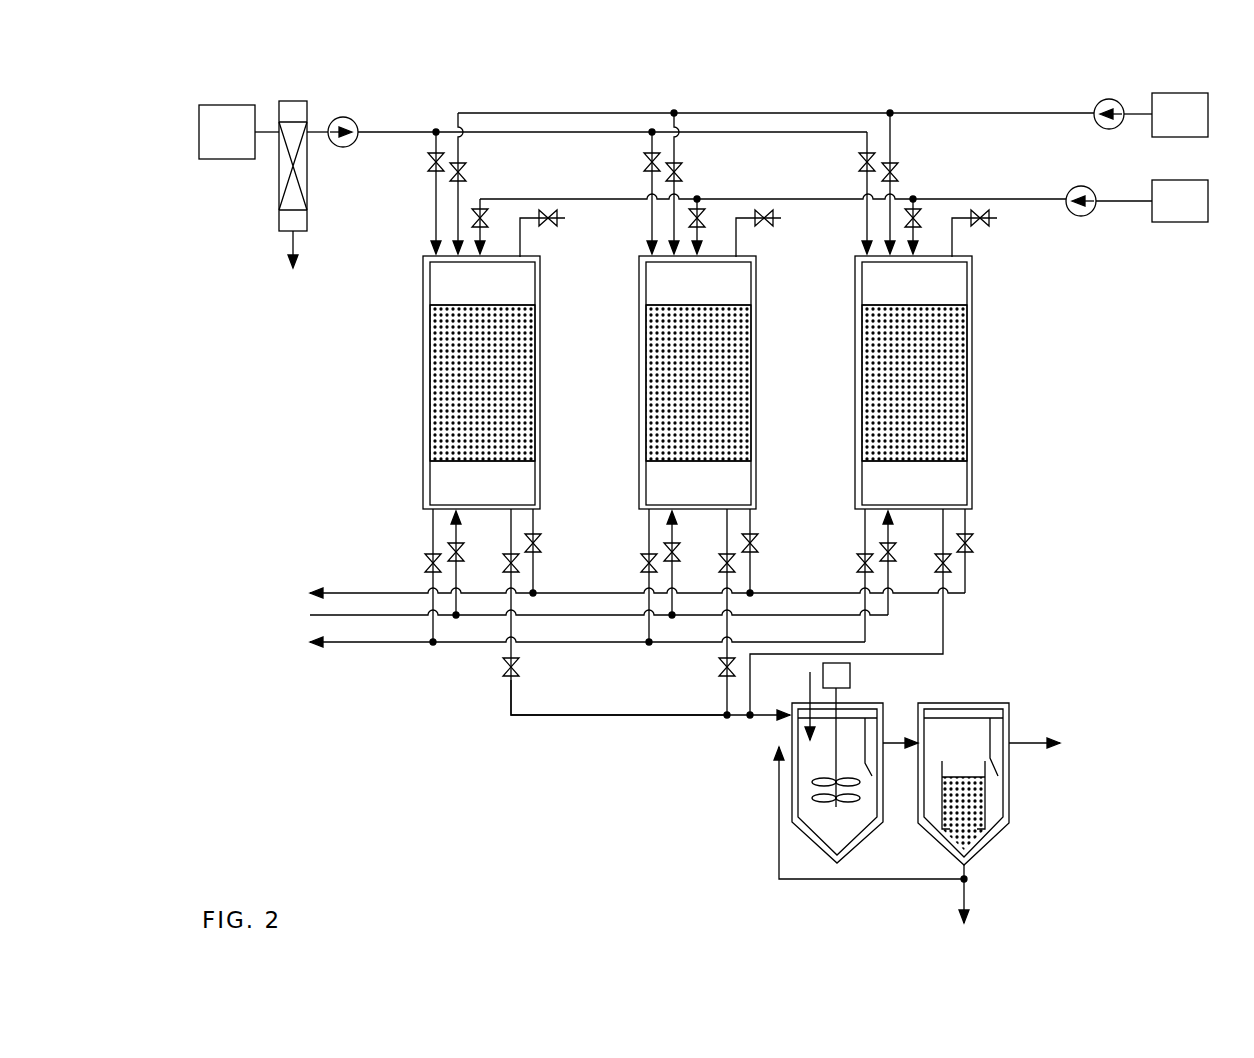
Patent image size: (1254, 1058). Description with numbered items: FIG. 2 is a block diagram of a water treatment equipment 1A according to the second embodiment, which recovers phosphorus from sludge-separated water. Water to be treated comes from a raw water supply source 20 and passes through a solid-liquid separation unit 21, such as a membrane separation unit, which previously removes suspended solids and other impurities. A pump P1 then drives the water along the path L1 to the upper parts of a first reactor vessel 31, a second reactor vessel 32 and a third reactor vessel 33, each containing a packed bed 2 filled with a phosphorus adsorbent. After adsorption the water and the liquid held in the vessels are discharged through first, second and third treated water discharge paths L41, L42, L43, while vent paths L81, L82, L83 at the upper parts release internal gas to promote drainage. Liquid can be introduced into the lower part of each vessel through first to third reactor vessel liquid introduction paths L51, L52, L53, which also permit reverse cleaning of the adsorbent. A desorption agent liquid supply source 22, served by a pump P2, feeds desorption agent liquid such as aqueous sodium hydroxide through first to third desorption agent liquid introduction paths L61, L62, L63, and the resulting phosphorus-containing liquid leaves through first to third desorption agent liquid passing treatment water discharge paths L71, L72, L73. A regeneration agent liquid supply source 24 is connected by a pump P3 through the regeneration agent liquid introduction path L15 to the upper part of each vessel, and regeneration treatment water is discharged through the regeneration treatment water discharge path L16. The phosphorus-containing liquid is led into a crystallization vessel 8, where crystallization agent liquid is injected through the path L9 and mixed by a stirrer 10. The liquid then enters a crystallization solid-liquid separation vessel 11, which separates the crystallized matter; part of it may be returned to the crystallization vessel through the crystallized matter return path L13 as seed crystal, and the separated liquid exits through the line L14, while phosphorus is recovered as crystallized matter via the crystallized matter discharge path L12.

The water treatment equipment 1A is at (718, 79).
The packed bed 2 is at (527, 387).
The crystallization vessel 8 is at (862, 840).
The stirrer 10 is at (850, 672).
The crystallization solid-liquid separation vessel 11 is at (1010, 795).
The raw water supply source 20 is at (227, 105).
The solid-liquid separation unit 21 is at (279, 194).
The desorption agent liquid supply source 22 is at (1181, 92).
The regeneration agent liquid supply source 24 is at (1180, 222).
The first reactor vessel 31 is at (542, 276).
The second reactor vessel 32 is at (758, 276).
The third reactor vessel 33 is at (972, 277).
The pump P1 is at (344, 118).
The pump P2 is at (1111, 97).
The pump P3 is at (1081, 182).
The path L1 is at (391, 138).
The regeneration agent liquid introduction path L15 is at (1023, 195).
The regeneration treatment water discharge path L16 is at (386, 590).
The first treated water discharge path L41 is at (432, 530).
The second treated water discharge path L42 is at (648, 530).
The third treated water discharge path L43 is at (864, 530).
The first reactor vessel liquid introduction path L51 is at (458, 574).
The second reactor vessel liquid introduction path L52 is at (674, 574).
The third reactor vessel liquid introduction path L53 is at (890, 574).
The first desorption agent liquid introduction path L61 is at (464, 148).
The second desorption agent liquid introduction path L62 is at (680, 148).
The third desorption agent liquid introduction path L63 is at (895, 145).
The first desorption agent liquid passing treatment water discharge path L71 is at (511, 698).
The second desorption agent liquid passing treatment water discharge path L72 is at (726, 698).
The third desorption agent liquid passing treatment water discharge path L73 is at (945, 640).
The vent path L81 is at (524, 239).
The vent path L82 is at (739, 239).
The vent path L83 is at (956, 239).
The path L9 is at (810, 685).
The crystallized matter discharge path L12 is at (965, 883).
The crystallized matter return path L13 is at (779, 803).
The supernatant discharge line L14 is at (1036, 743).